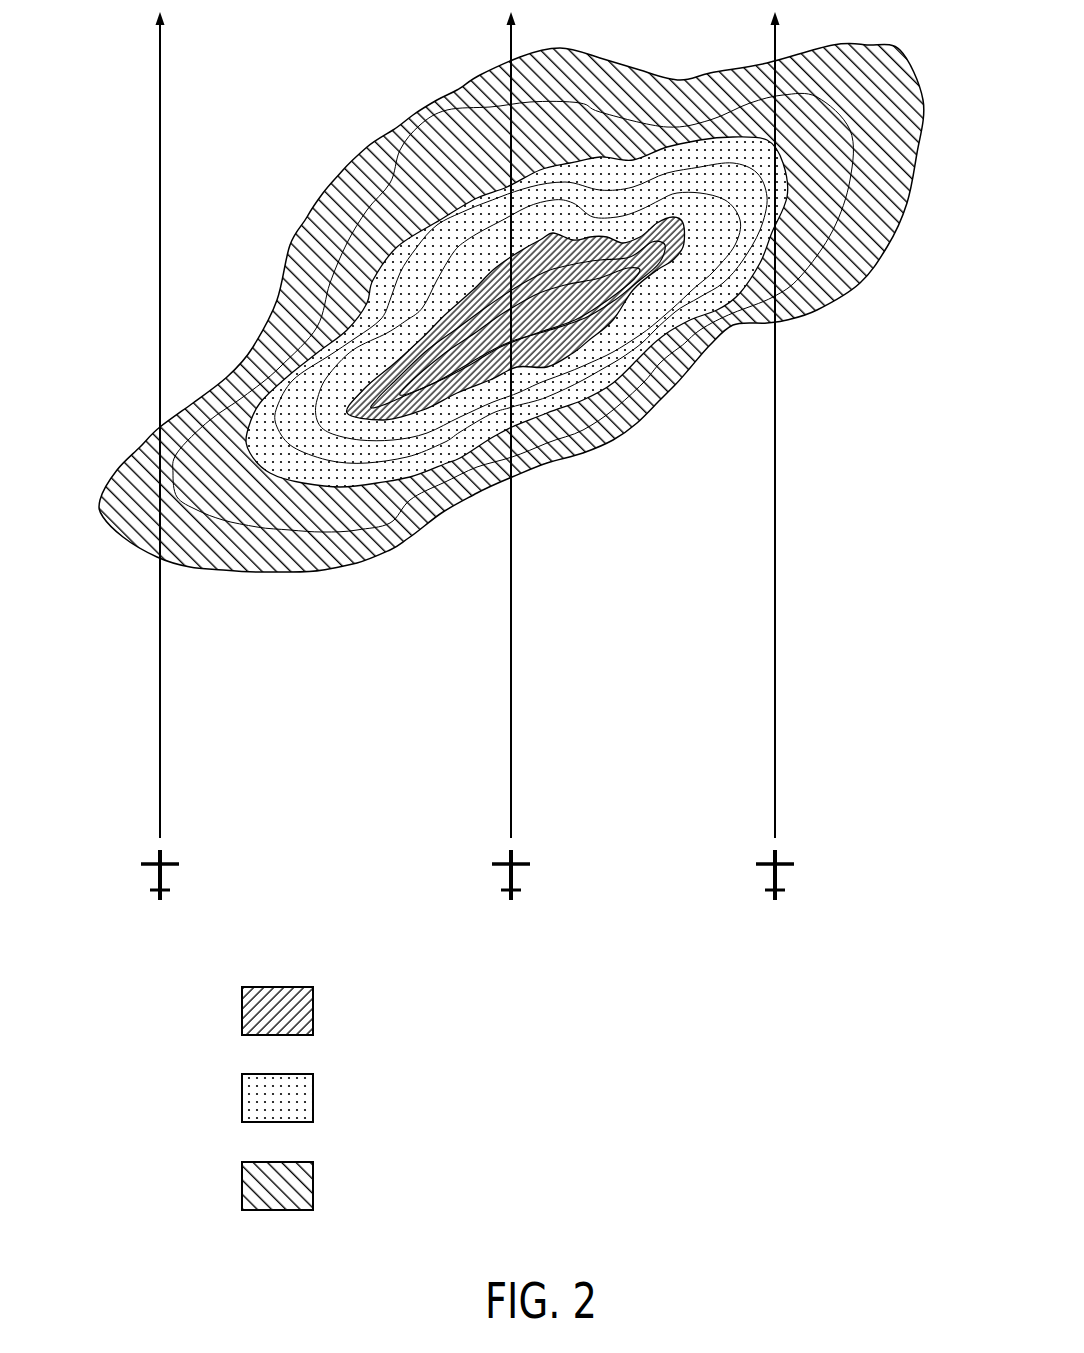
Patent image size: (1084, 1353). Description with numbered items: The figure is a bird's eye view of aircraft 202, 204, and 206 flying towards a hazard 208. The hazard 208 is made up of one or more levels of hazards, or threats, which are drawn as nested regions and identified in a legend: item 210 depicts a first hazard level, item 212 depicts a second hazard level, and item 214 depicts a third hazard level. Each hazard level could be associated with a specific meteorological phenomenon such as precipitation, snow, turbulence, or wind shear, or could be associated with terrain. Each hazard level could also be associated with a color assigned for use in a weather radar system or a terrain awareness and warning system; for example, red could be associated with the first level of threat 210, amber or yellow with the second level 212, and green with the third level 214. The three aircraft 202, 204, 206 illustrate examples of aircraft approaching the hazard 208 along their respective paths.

The aircraft 202 is at (509, 474).
The aircraft 204 is at (156, 474).
The aircraft 206 is at (773, 474).
The hazard 208 is at (680, 420).
The first hazard level 210 is at (362, 1011).
The second hazard level 212 is at (381, 1098).
The third hazard level 214 is at (366, 1186).